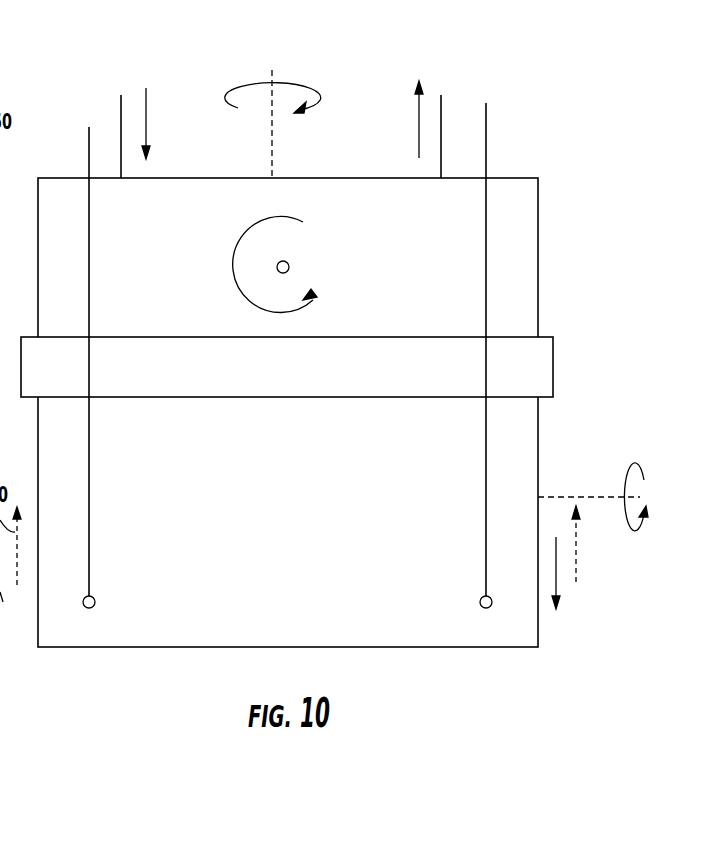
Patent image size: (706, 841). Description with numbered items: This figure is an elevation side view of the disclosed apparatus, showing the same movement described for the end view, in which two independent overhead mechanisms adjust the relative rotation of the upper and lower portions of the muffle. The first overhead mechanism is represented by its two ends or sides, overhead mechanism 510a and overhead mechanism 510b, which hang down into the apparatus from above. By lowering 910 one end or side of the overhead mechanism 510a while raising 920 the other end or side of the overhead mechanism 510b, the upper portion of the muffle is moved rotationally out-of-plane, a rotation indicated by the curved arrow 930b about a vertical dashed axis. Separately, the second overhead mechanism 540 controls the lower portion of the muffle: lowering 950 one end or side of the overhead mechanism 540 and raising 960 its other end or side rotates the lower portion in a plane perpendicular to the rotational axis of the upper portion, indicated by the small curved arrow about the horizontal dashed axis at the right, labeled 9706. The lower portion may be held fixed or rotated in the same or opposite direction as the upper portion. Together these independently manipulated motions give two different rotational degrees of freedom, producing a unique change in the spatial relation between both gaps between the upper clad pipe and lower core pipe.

The overhead mechanism 510a is at (121, 112).
The overhead mechanism 510b is at (441, 117).
The overhead mechanism 540 is at (89, 212).
The lowering 910 is at (146, 125).
The raising 920 is at (419, 128).
The rotation of upper portion 930b is at (290, 217).
The lowering 950 is at (560, 600).
The raising 960 is at (577, 553).
The rotation about horizontal axis 9706 is at (636, 463).